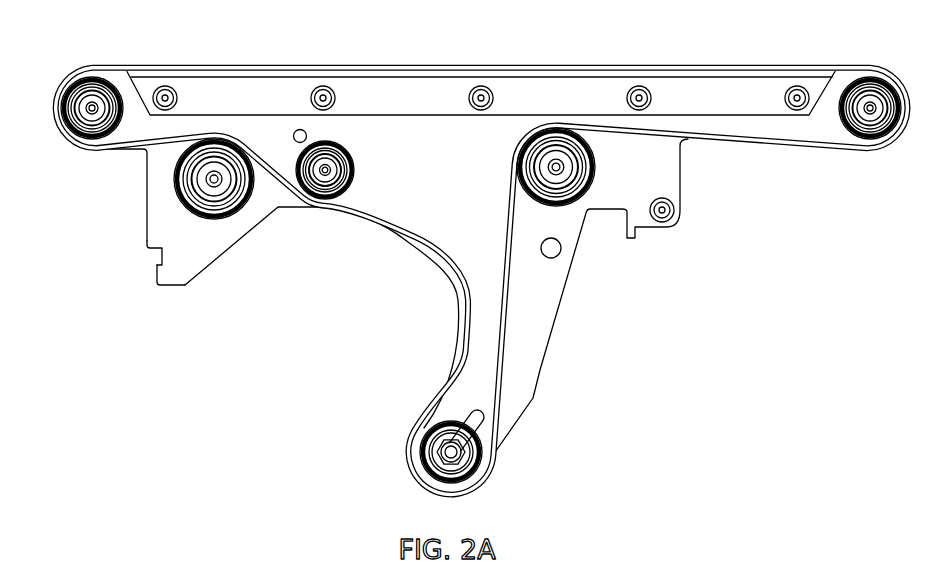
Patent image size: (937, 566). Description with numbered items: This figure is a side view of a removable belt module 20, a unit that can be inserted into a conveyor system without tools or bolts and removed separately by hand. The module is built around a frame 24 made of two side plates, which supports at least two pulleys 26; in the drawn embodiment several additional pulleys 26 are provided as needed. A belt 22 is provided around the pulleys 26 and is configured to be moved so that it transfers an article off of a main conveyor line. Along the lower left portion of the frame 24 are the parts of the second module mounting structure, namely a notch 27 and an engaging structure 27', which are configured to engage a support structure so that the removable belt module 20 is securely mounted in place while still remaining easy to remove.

The removable belt module 20 is at (466, 260).
The belt 22 is at (821, 65).
The frame 24 is at (558, 312).
The pulleys 26 is at (76, 112).
The notch 27 is at (131, 253).
The engaging structure 27' is at (148, 278).